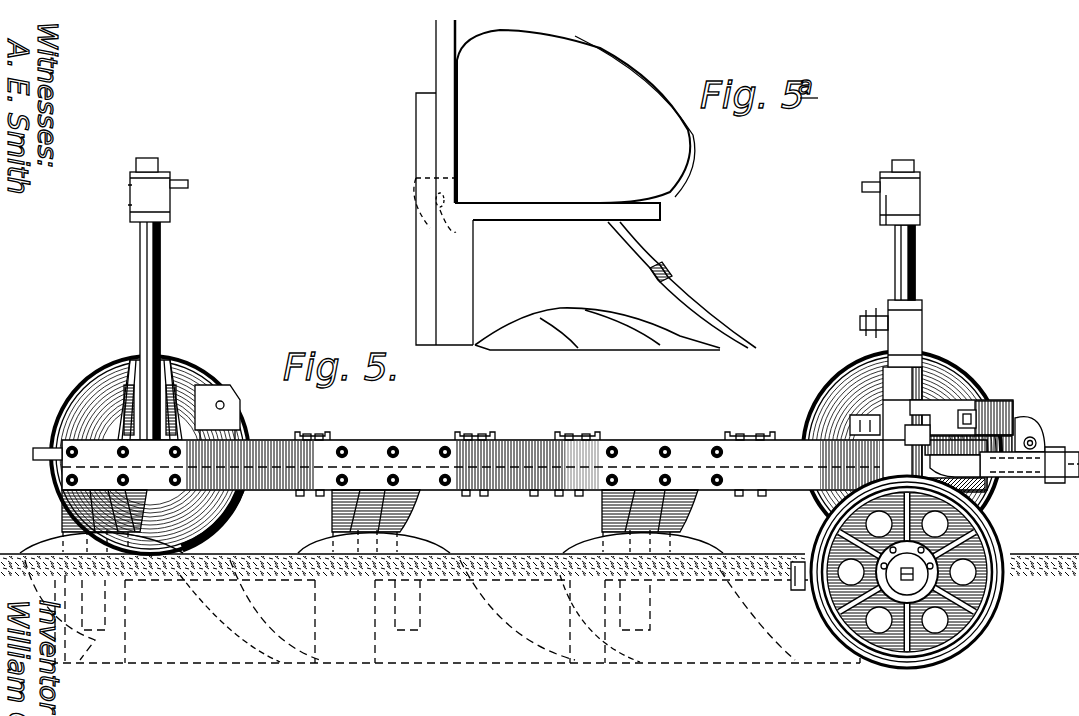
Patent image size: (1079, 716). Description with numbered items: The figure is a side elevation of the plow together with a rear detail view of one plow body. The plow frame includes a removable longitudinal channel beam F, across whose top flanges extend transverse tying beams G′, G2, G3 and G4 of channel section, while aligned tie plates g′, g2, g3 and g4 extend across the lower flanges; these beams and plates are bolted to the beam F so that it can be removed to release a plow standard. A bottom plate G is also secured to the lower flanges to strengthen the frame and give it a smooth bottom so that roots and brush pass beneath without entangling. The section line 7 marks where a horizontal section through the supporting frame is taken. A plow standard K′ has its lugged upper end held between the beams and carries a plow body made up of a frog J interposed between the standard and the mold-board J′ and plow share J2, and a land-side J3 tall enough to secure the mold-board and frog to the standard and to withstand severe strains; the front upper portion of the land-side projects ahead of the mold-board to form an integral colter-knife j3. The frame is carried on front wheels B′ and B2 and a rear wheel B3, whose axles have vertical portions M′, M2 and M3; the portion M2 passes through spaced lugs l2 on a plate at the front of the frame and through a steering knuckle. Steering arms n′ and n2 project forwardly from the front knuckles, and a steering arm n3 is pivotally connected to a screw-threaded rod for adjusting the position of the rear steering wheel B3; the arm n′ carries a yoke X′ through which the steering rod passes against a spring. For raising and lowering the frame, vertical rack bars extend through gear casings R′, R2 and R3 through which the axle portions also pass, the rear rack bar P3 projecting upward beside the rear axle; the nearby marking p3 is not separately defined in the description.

In FIG. 5, the section line 7 is at (36, 468).
In FIG. 5, the removable longitudinal channel beam F is at (524, 440).
In FIG. 5, the bottom plate G is at (535, 496).
In FIG. 5, the tying beam G′ is at (328, 432).
In FIG. 5, the tying beam G2 is at (458, 434).
In FIG. 5, the tying beam G3 is at (558, 436).
In FIG. 5, the tying beam G4 is at (728, 436).
In FIG. 5, the tie plate g′ is at (313, 496).
In FIG. 5, the tie plate g2 is at (482, 496).
In FIG. 5, the tie plate g3 is at (577, 496).
In FIG. 5, the tie plate g4 is at (752, 496).
In FIG. 5, the front wheel B′ is at (846, 356).
In FIG. 5, the front wheel B2 is at (1000, 528).
In FIG. 5, the rear wheel B3 is at (82, 370).
In FIG. 5, the vertical axle portion M′ is at (916, 253).
In FIG. 5, the vertical axle portion M2 is at (925, 364).
In FIG. 5, the rear axle vertical portion M3 is at (160, 290).
In FIG. 5, the gear casing R′ is at (922, 196).
In FIG. 5, the gear casing R2 is at (922, 318).
In FIG. 5, the gear casing R3 is at (166, 170).
In FIG. 5, the rack bar P3 is at (157, 320).
In FIG. 5, the bracket plate p3 is at (140, 378).
In FIG. 5, the steering arm n3 is at (185, 398).
In FIG. 5, the steering arm n2 is at (925, 414).
In FIG. 5, the steering arm n′ is at (948, 428).
In FIG. 5, the spaced horizontal lugs l2 is at (865, 430).
In FIG. 5, the yoke X′ is at (1020, 428).
In FIG. 5, the colter-knife j3 is at (525, 588).
In FIG. 5A, the plow standard K′ is at (436, 56).
In FIG. 5A, the land-side J3 is at (416, 136).
In FIG. 5A, the mold-board J′ is at (575, 125).
In FIG. 5A, the frog J is at (597, 304).
In FIG. 5A, the plow share J2 is at (704, 320).